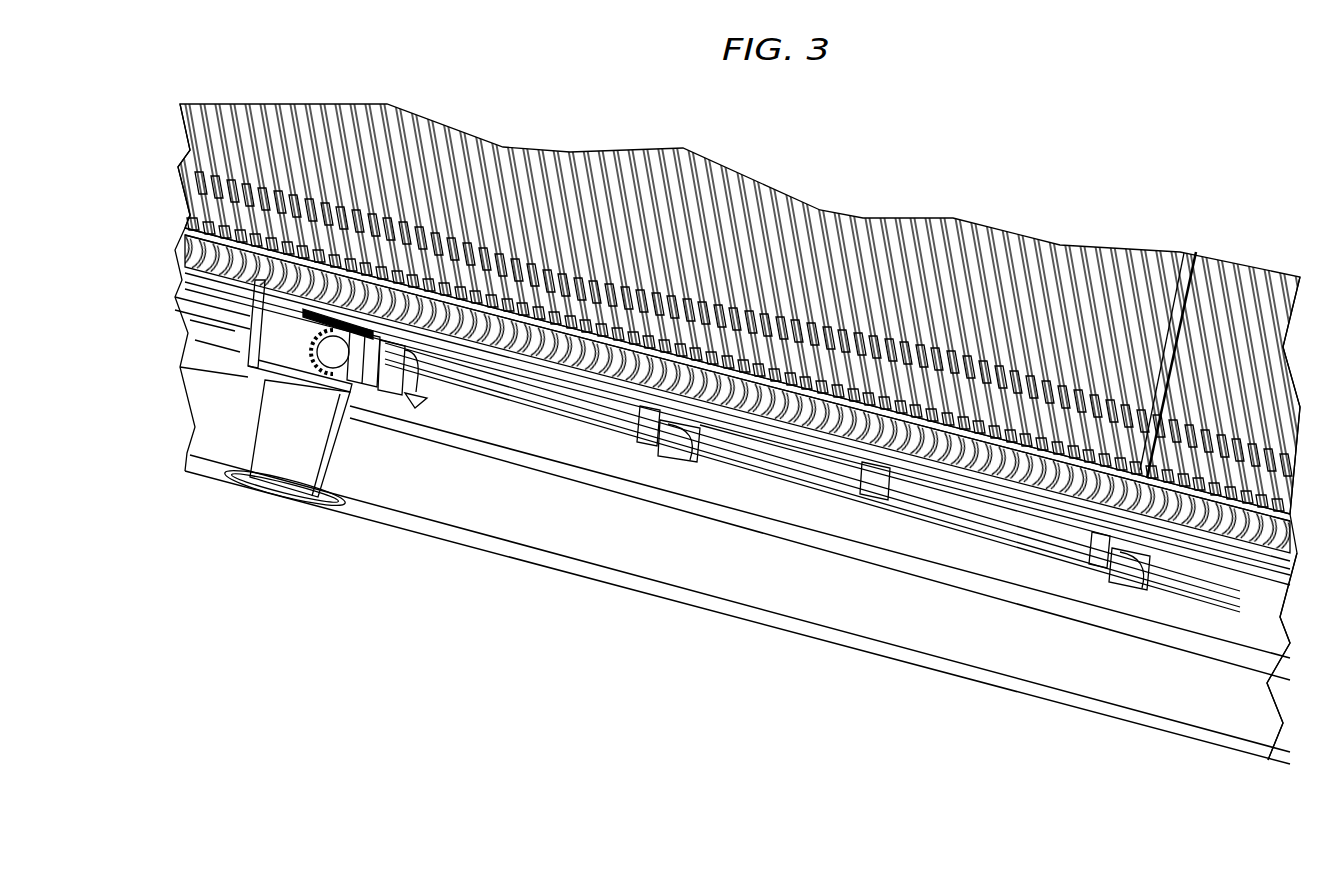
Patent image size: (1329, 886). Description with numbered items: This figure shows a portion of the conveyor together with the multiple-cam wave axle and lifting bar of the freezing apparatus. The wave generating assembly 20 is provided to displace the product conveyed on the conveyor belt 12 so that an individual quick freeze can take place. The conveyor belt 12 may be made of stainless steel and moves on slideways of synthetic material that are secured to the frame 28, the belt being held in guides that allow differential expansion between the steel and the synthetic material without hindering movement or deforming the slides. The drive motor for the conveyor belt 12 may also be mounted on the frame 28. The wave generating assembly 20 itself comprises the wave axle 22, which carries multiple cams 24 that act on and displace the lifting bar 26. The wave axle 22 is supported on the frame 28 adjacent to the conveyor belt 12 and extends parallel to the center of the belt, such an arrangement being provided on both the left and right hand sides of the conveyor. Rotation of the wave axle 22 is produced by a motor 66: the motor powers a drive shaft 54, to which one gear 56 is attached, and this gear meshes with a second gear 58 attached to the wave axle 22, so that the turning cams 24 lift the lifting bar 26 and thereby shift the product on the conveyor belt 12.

The conveyor belt 12 is at (1020, 447).
The wave generating assembly 20 is at (557, 440).
The wave axle 22 is at (807, 473).
The cams 24 is at (400, 408).
The lifting bar 26 is at (707, 237).
The frame 28 is at (1243, 553).
The drive shaft 54 is at (305, 347).
The gear 56 is at (250, 372).
The gear 58 is at (340, 410).
The motor 66 is at (320, 485).